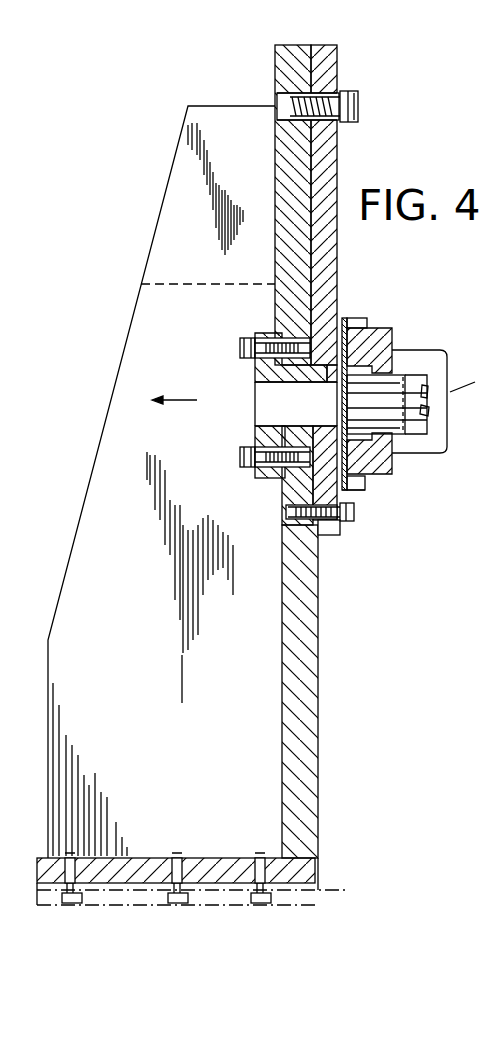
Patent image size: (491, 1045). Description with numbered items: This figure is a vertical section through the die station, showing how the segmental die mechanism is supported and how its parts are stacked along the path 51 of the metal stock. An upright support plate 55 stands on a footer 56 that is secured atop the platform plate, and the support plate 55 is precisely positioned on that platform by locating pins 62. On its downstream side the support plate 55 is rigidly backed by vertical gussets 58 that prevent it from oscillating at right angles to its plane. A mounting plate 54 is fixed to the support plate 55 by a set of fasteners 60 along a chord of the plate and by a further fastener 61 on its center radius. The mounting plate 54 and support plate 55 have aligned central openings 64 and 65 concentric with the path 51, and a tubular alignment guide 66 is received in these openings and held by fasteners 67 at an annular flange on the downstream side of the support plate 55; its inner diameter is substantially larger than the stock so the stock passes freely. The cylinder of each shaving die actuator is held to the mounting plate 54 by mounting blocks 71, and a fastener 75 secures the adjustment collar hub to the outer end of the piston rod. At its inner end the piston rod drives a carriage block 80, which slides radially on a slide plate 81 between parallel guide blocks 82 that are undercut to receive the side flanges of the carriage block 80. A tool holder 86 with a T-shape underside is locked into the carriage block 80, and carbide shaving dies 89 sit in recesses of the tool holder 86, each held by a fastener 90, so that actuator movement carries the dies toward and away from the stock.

The path of the metal stock 51 is at (183, 400).
The mounting plate 54 is at (332, 535).
The upright support plate 55 is at (318, 650).
The footer 56 is at (148, 858).
The vertical gussets 58 is at (266, 722).
The fasteners 60 is at (354, 520).
The fastener 61 is at (358, 108).
The locating pins 62 is at (176, 858).
The opening 64 is at (325, 383).
The opening 65 is at (300, 430).
The tubular alignment guide 66 is at (263, 478).
The fasteners 67 is at (240, 350).
The mounting blocks 71 is at (393, 350).
The fastener 75 is at (470, 380).
The carriage block 80 is at (398, 430).
The slide plate 81 is at (350, 487).
The guide blocks 82 is at (372, 326).
The tool holder 86 is at (443, 352).
The carbide shaving dies 89 is at (428, 410).
The fastener 90 is at (428, 392).